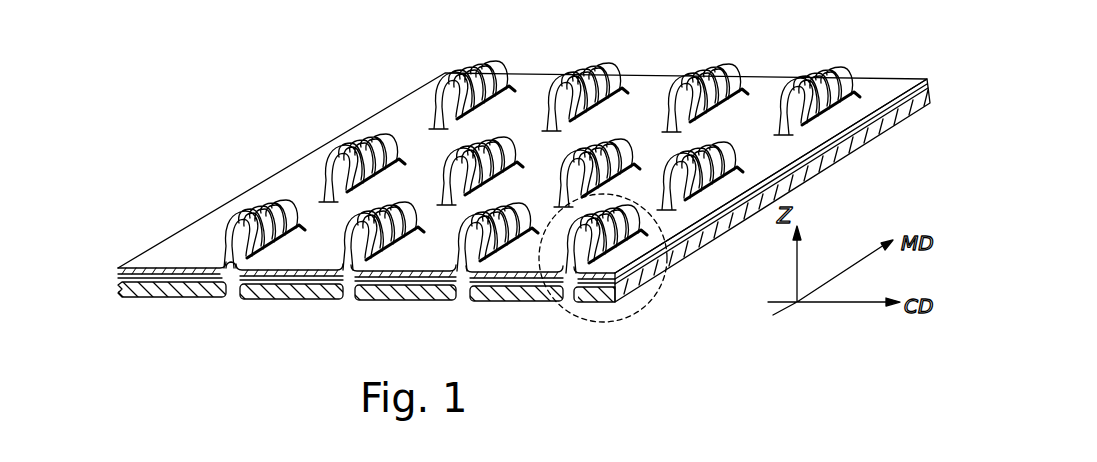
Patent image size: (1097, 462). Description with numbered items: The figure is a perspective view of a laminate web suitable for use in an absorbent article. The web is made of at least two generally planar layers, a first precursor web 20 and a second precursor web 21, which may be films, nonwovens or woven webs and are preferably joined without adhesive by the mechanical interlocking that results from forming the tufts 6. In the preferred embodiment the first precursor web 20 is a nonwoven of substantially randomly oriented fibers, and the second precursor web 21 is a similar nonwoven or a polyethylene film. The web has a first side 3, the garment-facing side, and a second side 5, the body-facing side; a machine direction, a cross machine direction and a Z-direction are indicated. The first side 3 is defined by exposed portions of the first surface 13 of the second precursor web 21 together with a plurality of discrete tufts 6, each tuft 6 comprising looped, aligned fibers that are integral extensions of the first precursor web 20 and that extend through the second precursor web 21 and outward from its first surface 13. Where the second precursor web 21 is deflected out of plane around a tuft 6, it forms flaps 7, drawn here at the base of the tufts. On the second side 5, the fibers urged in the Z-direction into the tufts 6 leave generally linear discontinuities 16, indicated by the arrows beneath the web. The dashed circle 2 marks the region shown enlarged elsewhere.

The detail region shown in FIG. 2 is at (650, 303).
The first side 3 is at (882, 83).
The second side 5 is at (888, 133).
The tufts 6 is at (465, 142).
The flaps 7 is at (380, 178).
The first surface of second precursor web 13 is at (312, 167).
The discontinuities 16 is at (350, 307).
The first precursor web 20 is at (153, 293).
The second precursor web 21 is at (182, 268).